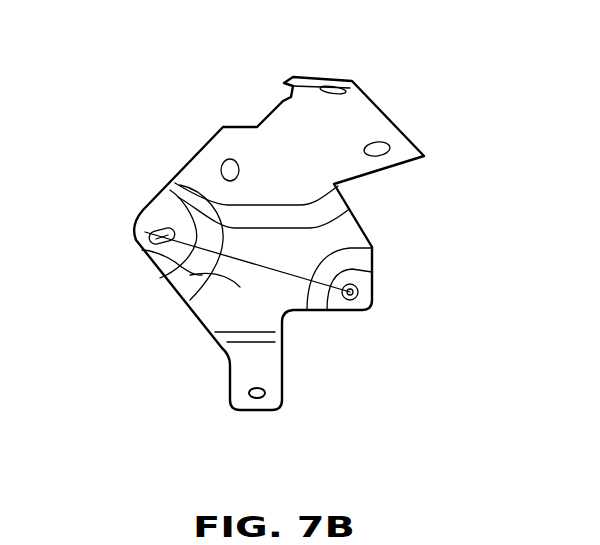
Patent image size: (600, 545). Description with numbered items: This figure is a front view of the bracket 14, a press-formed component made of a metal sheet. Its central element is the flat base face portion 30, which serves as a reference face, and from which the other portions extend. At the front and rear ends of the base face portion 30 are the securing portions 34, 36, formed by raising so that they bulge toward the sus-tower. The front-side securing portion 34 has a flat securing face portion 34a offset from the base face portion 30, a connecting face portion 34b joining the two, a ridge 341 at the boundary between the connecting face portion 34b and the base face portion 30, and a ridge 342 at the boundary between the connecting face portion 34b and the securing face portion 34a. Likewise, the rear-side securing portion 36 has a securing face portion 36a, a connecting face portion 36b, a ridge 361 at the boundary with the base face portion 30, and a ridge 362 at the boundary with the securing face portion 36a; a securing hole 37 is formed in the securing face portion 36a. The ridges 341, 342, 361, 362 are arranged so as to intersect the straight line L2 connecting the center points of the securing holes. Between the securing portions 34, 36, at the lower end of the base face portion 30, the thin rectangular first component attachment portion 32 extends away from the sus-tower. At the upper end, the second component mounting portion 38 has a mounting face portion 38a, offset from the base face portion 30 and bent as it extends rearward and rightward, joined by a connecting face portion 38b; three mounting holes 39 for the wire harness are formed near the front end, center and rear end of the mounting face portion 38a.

The bracket 14 is at (477, 142).
The base face portion 30 is at (240, 287).
The first component attachment portion 32 is at (265, 368).
The front-side securing portion 34 is at (67, 120).
The securing face portion 34a is at (160, 212).
The connecting face portion 34b is at (183, 205).
The ridge 341 is at (245, 258).
The ridge 342 is at (150, 248).
The rear-side securing portion 36 is at (498, 205).
The securing face portion 36a is at (374, 287).
The connecting face portion 36b is at (355, 260).
The ridge 361 is at (298, 311).
The ridge 362 is at (348, 305).
The securing hole 37 is at (360, 292).
The second component mounting portion 38 is at (281, 141).
The mounting face portion 38a is at (262, 148).
The connecting face portion 38b is at (342, 210).
The mounting holes 39 is at (221, 165).
The straight line L2 is at (272, 270).